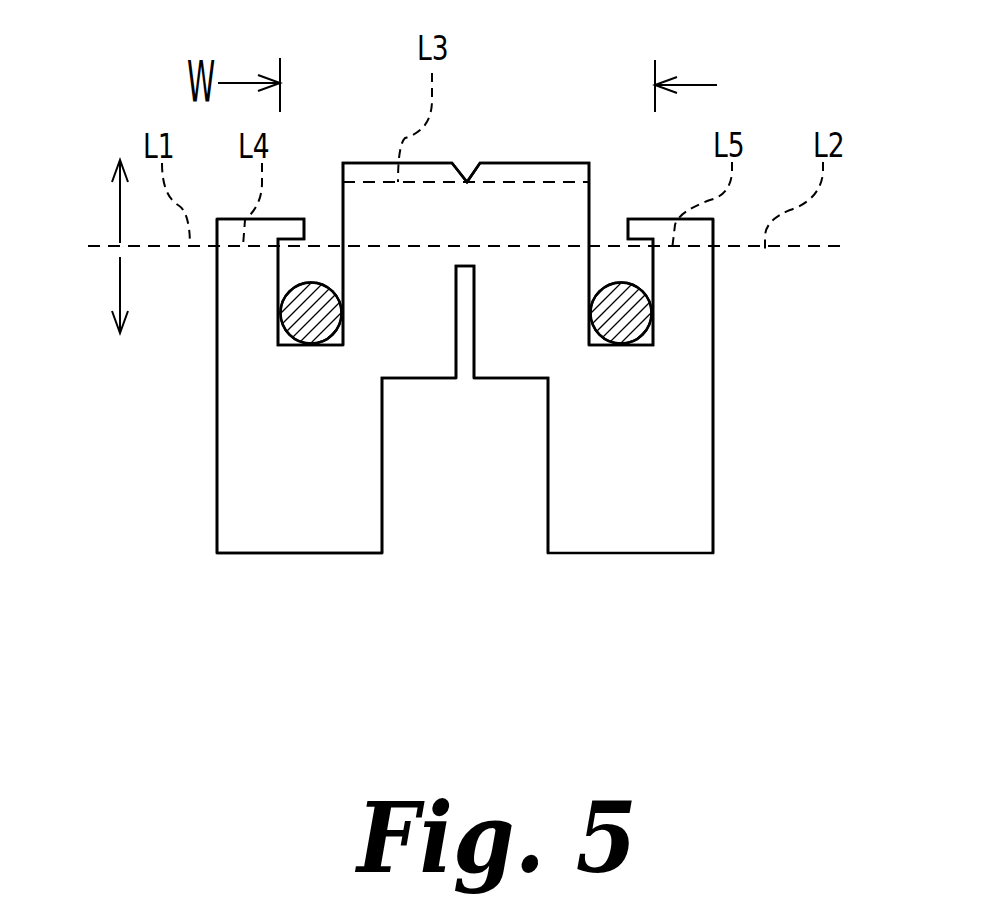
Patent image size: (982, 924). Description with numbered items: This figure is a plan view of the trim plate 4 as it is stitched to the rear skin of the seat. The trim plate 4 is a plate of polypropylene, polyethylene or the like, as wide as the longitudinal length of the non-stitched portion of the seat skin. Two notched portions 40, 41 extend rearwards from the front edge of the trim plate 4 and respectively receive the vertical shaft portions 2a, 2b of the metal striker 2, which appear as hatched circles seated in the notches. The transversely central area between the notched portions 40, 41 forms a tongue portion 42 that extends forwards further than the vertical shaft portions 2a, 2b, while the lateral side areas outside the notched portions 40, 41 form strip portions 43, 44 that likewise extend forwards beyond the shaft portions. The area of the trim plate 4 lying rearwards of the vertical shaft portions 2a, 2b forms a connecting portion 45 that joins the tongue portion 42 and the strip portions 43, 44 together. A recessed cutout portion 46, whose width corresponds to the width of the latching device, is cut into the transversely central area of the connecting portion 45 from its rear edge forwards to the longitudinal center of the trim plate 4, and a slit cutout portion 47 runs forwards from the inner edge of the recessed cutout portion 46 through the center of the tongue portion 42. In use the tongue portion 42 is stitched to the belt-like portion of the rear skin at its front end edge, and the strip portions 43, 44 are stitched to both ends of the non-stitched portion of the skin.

The striker 2 is at (298, 345).
The vertical shaft portion 2a is at (293, 319).
The vertical shaft portion 2b is at (621, 318).
The trim plate 4 is at (717, 502).
The notched portion 40 is at (278, 265).
The notched portion 41 is at (653, 267).
The tongue portion 42 is at (522, 218).
The strip portion 43 is at (240, 272).
The strip portion 44 is at (688, 275).
The connecting portion 45 is at (216, 510).
The recessed cutout portion 46 is at (382, 483).
The slit cutout portion 47 is at (474, 299).